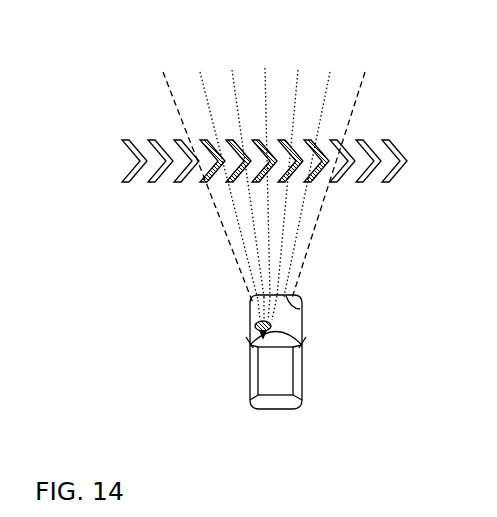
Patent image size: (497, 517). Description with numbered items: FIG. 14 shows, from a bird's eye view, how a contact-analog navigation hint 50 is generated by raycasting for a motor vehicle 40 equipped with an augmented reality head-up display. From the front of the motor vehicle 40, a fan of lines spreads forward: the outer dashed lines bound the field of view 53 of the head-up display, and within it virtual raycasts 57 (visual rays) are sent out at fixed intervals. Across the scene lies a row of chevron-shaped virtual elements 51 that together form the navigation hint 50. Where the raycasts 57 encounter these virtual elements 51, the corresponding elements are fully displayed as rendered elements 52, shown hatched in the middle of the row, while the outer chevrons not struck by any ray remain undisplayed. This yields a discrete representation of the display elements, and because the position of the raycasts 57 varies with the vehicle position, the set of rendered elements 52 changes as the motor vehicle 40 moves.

The motor vehicle 40 is at (292, 405).
The contact-analog navigation hint 50 is at (320, 158).
The virtual elements 51 is at (393, 173).
The rendered elements 52 is at (230, 138).
The field of view 53 is at (215, 214).
The virtual raycasts 57 is at (325, 102).